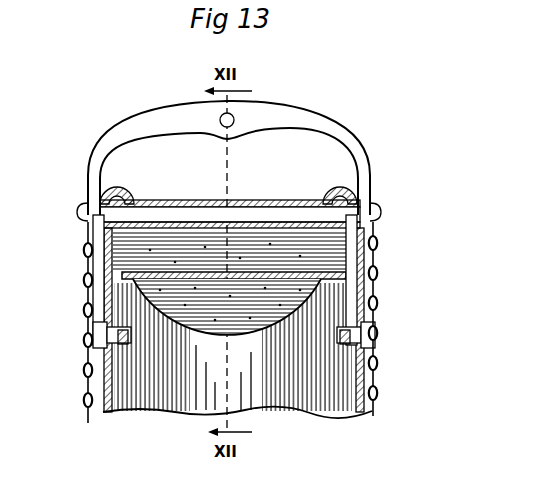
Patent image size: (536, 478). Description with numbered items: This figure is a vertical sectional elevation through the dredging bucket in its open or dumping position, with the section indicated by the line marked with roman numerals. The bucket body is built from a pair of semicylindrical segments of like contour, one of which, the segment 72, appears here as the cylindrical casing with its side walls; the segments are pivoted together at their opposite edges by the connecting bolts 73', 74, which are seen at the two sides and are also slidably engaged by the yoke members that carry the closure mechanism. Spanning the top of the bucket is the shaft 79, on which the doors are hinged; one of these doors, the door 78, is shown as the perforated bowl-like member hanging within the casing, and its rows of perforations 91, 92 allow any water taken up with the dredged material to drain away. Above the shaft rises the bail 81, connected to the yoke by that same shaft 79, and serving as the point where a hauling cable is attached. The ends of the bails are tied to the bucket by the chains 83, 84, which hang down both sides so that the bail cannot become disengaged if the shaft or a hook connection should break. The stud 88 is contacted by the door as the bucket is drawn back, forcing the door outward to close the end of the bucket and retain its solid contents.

The semicylindrical segment 72 is at (237, 323).
The door 78 is at (240, 332).
The shaft 79 is at (167, 214).
The bail 81 is at (229, 154).
The chain 83 is at (80, 262).
The chain 84 is at (379, 258).
The connecting bolt 73' is at (86, 282).
The connecting bolt 74 is at (376, 338).
The stud 88 is at (222, 275).
The row of perforations 91 is at (208, 316).
The row of perforations 92 is at (274, 297).